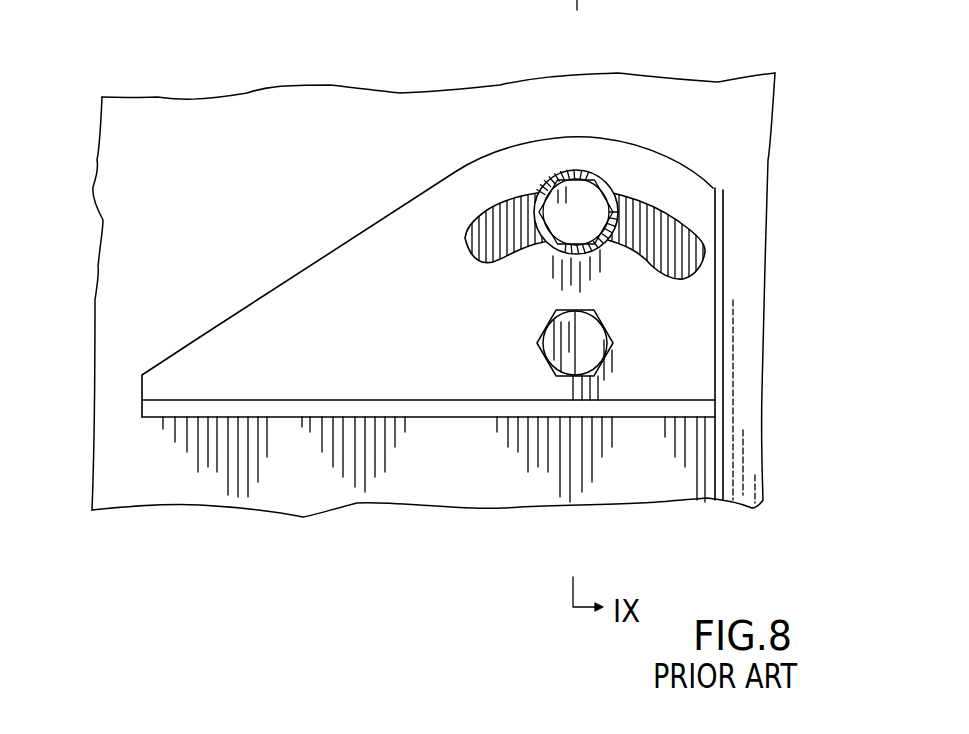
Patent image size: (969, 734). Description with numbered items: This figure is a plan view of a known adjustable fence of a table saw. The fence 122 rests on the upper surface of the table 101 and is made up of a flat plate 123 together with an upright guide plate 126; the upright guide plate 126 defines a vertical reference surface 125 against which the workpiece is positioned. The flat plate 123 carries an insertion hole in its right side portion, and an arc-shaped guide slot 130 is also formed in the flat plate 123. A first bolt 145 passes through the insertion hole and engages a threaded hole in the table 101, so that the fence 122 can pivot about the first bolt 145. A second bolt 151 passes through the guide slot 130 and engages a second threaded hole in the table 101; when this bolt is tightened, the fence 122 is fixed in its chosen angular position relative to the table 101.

The table 101 is at (642, 470).
The fence 122 is at (218, 322).
The flat plate 123 is at (185, 367).
The vertical reference surface 125 is at (180, 420).
The upright guide plate 126 is at (430, 410).
The guide slot 130 is at (680, 237).
The first bolt 145 is at (587, 340).
The second bolt 151 is at (585, 207).